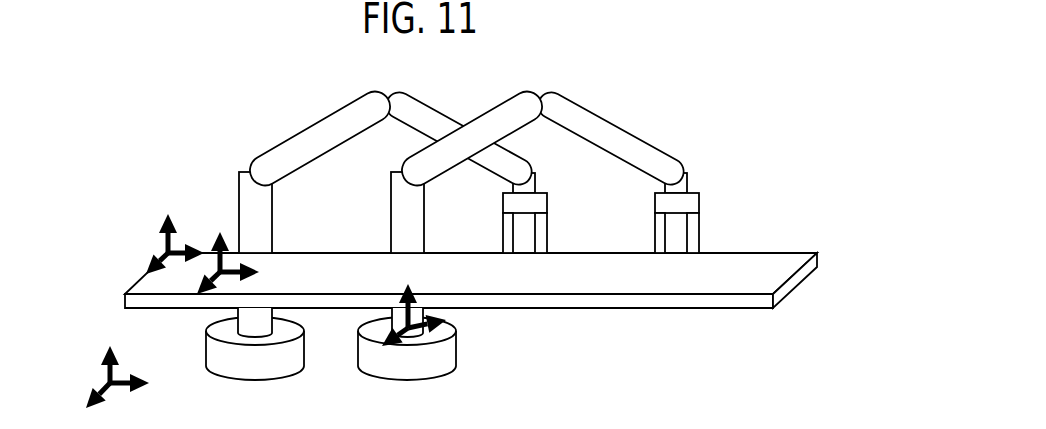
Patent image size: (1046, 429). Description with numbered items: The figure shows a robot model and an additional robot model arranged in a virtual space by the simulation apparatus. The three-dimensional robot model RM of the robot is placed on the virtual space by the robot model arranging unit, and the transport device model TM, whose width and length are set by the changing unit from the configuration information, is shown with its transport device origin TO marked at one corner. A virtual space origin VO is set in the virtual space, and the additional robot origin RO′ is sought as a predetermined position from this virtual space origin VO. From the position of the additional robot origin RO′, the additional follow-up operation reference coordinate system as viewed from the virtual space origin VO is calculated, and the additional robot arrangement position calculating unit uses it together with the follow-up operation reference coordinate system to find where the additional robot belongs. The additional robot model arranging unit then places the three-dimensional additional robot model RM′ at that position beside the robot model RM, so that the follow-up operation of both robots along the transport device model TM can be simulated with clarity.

The robot model RM is at (286, 117).
The additional robot model RM′ is at (652, 116).
The transport device model TM is at (778, 262).
The transport device origin TO is at (165, 223).
The virtual space origin VO is at (107, 380).
The additional robot origin RO′ is at (418, 326).